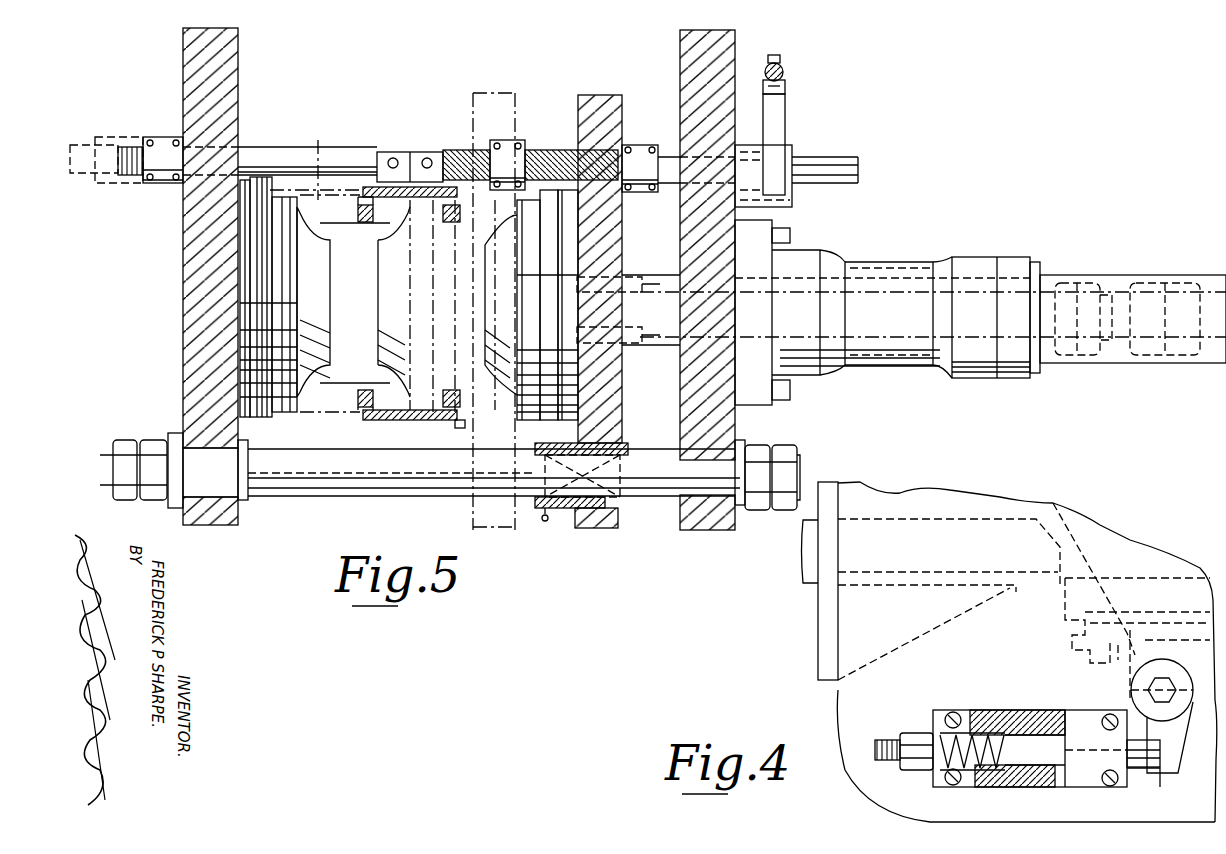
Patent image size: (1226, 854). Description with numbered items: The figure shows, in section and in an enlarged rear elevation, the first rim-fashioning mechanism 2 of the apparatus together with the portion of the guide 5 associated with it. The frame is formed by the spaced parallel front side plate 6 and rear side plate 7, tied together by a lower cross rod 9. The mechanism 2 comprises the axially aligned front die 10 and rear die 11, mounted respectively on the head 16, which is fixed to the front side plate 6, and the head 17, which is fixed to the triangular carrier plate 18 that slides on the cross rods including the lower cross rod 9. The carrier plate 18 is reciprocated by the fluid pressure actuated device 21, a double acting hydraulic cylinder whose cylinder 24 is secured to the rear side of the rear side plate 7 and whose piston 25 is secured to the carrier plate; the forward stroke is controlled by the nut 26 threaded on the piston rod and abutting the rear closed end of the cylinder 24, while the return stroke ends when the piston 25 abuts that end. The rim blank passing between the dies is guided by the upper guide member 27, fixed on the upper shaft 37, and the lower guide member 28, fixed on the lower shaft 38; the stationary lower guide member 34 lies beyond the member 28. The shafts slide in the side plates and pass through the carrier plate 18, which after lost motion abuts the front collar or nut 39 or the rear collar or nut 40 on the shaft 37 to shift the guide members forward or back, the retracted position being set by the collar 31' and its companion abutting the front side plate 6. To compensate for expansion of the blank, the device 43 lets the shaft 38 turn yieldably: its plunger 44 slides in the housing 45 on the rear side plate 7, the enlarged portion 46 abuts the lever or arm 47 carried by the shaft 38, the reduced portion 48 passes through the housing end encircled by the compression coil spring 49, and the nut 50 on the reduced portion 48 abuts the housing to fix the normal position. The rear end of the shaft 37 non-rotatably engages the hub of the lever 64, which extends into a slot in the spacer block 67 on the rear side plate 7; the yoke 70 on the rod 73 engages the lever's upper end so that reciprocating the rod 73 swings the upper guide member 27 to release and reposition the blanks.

In FIG. 5, the mechanism 2 is at (492, 404).
In FIG. 5, the guide 5 is at (436, 424).
In FIG. 4, the guide 5 is at (1047, 588).
In FIG. 5, the front side plate 6 is at (210, 526).
In FIG. 4, the front side plate 6 is at (895, 494).
In FIG. 5, the rear side plate 7 is at (705, 520).
In FIG. 4, the rear side plate 7 is at (850, 702).
In FIG. 5, the lower cross rod 9 is at (315, 486).
In FIG. 5, the front die 10 is at (280, 200).
In FIG. 5, the rear die 11 is at (513, 222).
In FIG. 5, the head 16 is at (268, 417).
In FIG. 5, the head 17 is at (550, 412).
In FIG. 5, the carrier plate 18 is at (598, 108).
In FIG. 4, the carrier plate 18 is at (1085, 530).
In FIG. 5, the fluid pressure actuated device 21 is at (976, 256).
In FIG. 5, the cylinder 24 is at (890, 275).
In FIG. 5, the piston 25 is at (958, 362).
In FIG. 5, the nut 26 is at (1160, 285).
In FIG. 5, the upper guide member 27 is at (392, 222).
In FIG. 5, the lower guide member 28 is at (390, 420).
In FIG. 4, the lower guide member 28 is at (1112, 578).
In FIG. 5, the nut 31' is at (155, 179).
In FIG. 4, the lower guide member 34 is at (803, 583).
In FIG. 5, the upper shaft 37 is at (318, 158).
In FIG. 4, the lower shaft 38 is at (1167, 675).
In FIG. 5, the front collar or nut 39 is at (520, 142).
In FIG. 5, the rear collar or nut 40 is at (648, 152).
In FIG. 4, the device 43 is at (1097, 712).
In FIG. 4, the plunger 44 is at (1140, 780).
In FIG. 4, the housing 45 is at (1035, 712).
In FIG. 4, the enlarged portion 46 is at (1150, 768).
In FIG. 4, the lever or arm 47 is at (1178, 745).
In FIG. 4, the reduced portion 48 is at (1005, 780).
In FIG. 4, the compression coil spring 49 is at (995, 735).
In FIG. 4, the nut 50 is at (918, 770).
In FIG. 5, the lever 64 is at (780, 126).
In FIG. 5, the spacer block 67 is at (790, 158).
In FIG. 5, the yoke 70 is at (788, 92).
In FIG. 5, the rod 73 is at (786, 68).